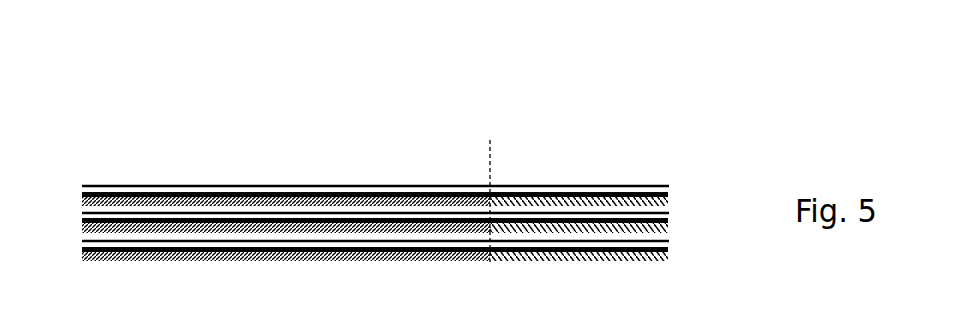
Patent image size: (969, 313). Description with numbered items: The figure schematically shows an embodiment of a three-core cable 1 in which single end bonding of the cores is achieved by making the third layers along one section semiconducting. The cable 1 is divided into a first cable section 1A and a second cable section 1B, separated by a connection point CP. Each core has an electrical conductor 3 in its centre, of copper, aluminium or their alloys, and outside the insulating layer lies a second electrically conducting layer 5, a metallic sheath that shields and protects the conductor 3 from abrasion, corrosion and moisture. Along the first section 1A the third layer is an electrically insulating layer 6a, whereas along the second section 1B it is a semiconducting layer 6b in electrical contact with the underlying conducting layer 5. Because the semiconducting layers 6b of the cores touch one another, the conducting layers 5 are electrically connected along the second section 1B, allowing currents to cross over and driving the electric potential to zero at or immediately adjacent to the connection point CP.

The cable 1 is at (703, 87).
The first cable section 1A is at (490, 108).
The second cable section 1B is at (673, 110).
The connection point CP is at (493, 185).
The electrical conductor 3 is at (552, 185).
The second electrically conducting layer 5 is at (667, 190).
The electrically insulating third layer 6a is at (81, 226).
The semiconducting third layer 6b is at (667, 228).